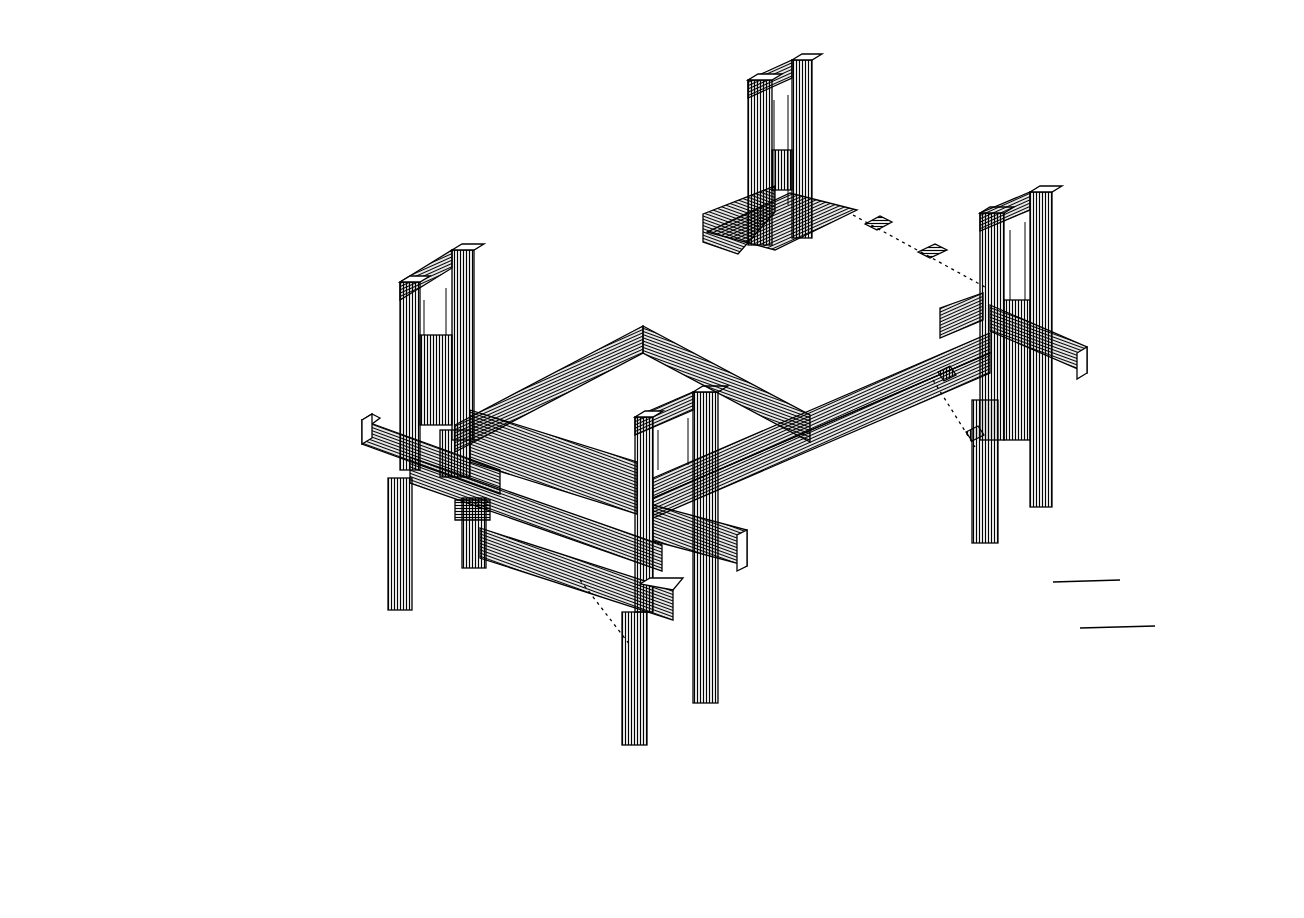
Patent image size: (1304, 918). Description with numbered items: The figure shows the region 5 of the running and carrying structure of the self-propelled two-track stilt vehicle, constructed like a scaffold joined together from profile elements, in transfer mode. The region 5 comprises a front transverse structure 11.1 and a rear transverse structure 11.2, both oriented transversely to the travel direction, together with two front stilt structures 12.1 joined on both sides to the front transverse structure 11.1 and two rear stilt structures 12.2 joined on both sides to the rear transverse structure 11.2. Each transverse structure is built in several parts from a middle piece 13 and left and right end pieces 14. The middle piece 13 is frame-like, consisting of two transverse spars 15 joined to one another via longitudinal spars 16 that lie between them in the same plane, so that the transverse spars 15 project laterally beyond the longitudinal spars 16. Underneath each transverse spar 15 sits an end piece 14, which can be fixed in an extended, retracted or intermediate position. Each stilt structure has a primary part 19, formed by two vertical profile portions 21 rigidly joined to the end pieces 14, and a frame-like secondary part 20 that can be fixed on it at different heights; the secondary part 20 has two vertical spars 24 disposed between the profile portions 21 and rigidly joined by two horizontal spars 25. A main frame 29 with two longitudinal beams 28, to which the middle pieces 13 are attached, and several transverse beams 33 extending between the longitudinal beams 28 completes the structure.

The region constructed in the manner of a scaffold 5 is at (1132, 216).
The front transverse structure 11.1 is at (600, 420).
The rear transverse structure 11.2 is at (910, 406).
The front stilt structure 12.1 is at (742, 601).
The rear stilt structure 12.2 is at (1084, 394).
The middle piece 13 is at (517, 538).
The end piece 14 is at (937, 416).
The transverse spar 15 is at (702, 214).
The longitudinal spar 16 is at (437, 500).
The primary part 19 is at (372, 550).
The secondary part 20 is at (390, 320).
The vertical profile portion 21 is at (1055, 486).
The vertical spar 24 is at (988, 248).
The horizontal spar 25 is at (1013, 248).
The longitudinal beam 28 is at (760, 472).
The main frame 29 is at (556, 347).
The transverse beam 33 is at (460, 522).